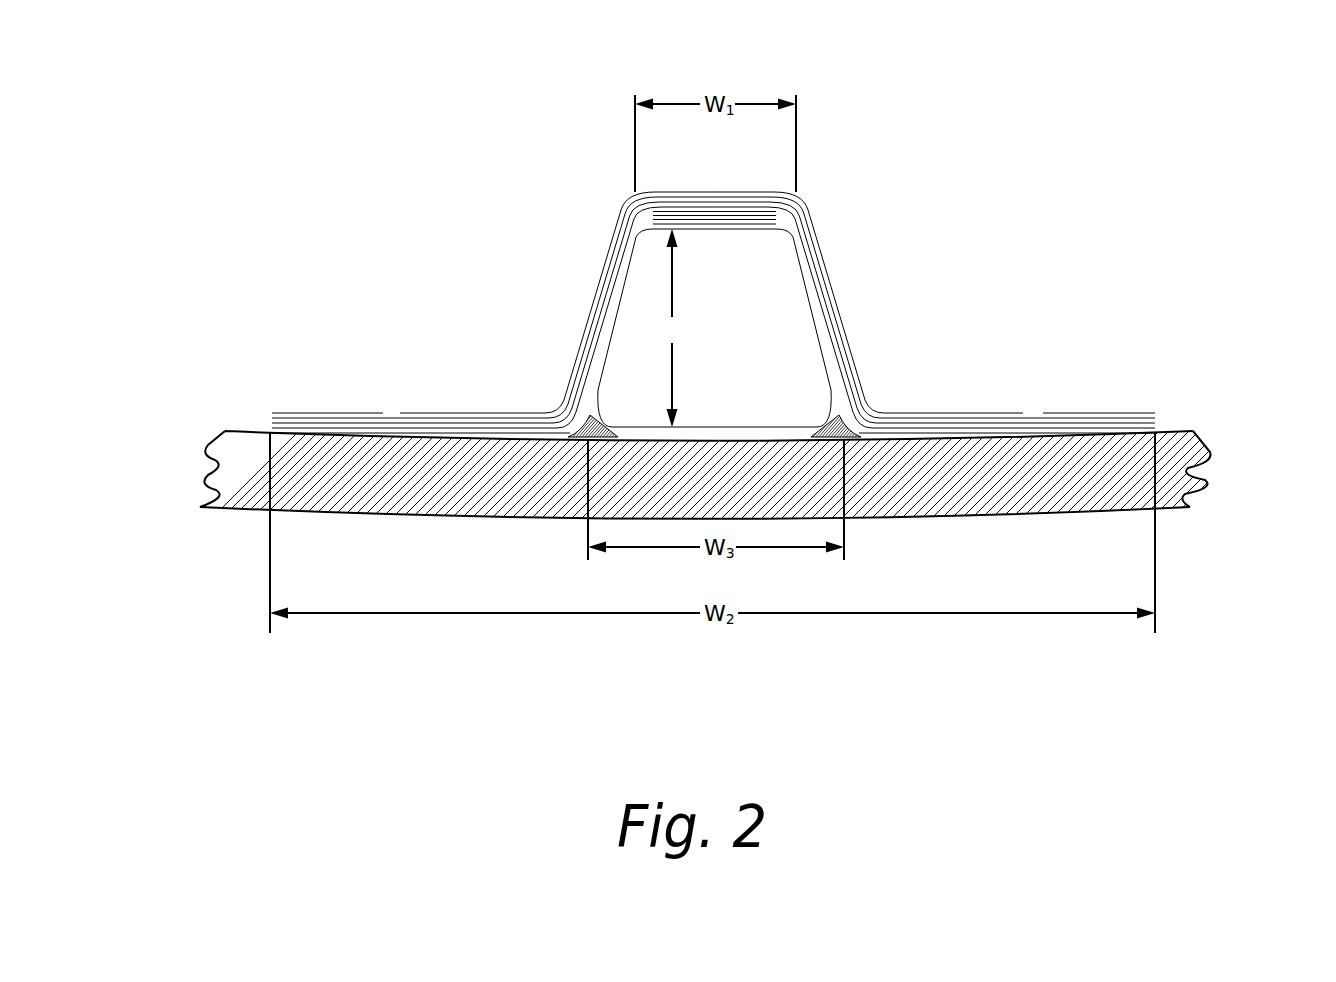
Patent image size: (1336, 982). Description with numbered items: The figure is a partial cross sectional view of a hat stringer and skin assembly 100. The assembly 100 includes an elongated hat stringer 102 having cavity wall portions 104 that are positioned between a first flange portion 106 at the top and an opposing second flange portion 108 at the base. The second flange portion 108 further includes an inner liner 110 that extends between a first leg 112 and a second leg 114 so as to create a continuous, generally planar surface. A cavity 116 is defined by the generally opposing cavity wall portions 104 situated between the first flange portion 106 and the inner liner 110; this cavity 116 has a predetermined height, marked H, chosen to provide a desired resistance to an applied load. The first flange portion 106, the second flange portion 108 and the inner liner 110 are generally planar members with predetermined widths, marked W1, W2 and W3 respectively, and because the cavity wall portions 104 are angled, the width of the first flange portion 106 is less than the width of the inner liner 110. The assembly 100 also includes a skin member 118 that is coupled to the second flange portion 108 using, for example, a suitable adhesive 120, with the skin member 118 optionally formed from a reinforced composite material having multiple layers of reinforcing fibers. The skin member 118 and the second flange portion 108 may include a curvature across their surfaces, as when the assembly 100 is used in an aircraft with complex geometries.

The hat stringer and skin assembly 100 is at (440, 116).
The hat stringer 102 is at (838, 153).
The cavity wall portions 104 is at (593, 310).
The first flange portion 106 is at (674, 193).
The second flange portion 108 is at (990, 387).
The inner liner 110 is at (782, 427).
The first leg 112 is at (442, 413).
The second leg 114 is at (1015, 413).
The cavity 116 is at (791, 268).
The skin member 118 is at (214, 539).
The adhesive 120 is at (1177, 415).